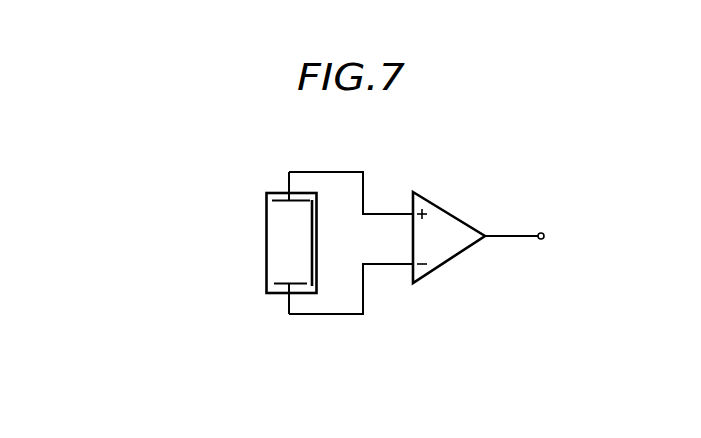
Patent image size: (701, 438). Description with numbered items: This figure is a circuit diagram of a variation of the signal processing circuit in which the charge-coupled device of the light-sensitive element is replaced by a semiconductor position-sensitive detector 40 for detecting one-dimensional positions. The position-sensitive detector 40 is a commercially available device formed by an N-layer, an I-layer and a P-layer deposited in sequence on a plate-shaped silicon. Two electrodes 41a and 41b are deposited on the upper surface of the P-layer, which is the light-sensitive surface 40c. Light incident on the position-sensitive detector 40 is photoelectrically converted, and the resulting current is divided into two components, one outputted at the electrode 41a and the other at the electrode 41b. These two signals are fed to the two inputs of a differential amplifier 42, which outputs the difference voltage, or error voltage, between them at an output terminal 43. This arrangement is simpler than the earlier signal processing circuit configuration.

The position-sensitive detector 40 is at (267, 232).
The light-sensitive surface 40c is at (307, 245).
The electrode 41a is at (289, 172).
The electrode 41b is at (289, 300).
The differential amplifier 42 is at (448, 209).
The output terminal 43 is at (541, 233).